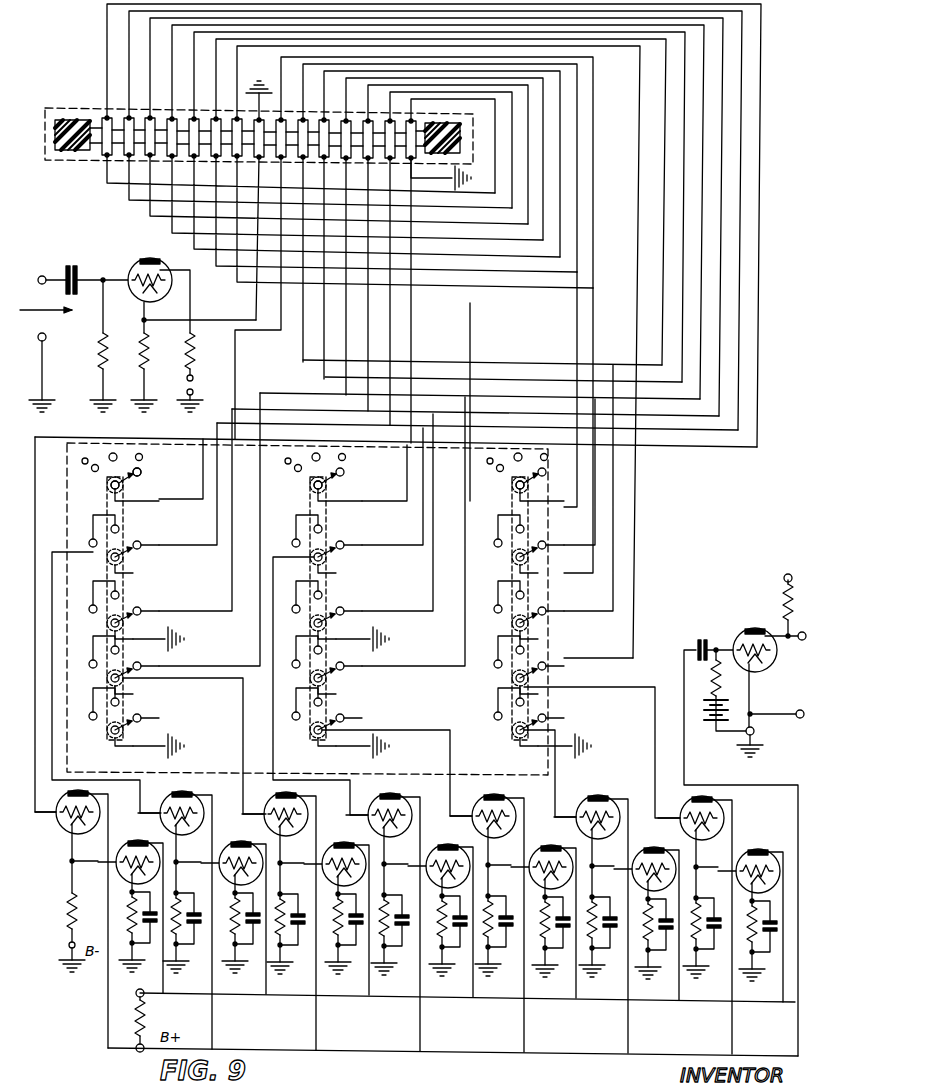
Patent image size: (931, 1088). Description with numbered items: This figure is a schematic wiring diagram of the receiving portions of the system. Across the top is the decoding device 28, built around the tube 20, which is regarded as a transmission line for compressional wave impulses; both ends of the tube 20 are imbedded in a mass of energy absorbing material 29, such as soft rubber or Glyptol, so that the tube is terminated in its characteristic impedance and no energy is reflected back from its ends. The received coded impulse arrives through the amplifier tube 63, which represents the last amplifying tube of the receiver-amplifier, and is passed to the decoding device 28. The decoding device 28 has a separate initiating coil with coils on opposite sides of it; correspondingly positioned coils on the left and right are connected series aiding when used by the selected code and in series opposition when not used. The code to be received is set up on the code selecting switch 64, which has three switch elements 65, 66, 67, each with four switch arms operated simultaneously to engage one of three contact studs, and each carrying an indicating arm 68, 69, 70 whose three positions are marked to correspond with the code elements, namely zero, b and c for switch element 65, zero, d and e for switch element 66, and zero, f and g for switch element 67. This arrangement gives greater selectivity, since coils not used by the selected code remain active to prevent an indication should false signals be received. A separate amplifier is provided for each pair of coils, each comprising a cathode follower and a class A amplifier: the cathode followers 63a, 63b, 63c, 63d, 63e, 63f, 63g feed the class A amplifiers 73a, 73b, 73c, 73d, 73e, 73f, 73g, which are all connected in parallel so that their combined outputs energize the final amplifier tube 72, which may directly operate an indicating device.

The tube 20 is at (98, 157).
The decoding device 28 is at (52, 108).
The energy absorbing material 29 is at (62, 150).
The amplifier tube 63 is at (137, 268).
The cathode follower tube 63a is at (62, 805).
The cathode follower tube 63b is at (166, 806).
The cathode follower tube 63c is at (270, 807).
The cathode follower tube 63d is at (374, 808).
The cathode follower tube 63e is at (478, 809).
The cathode follower tube 63f is at (582, 810).
The cathode follower tube 63g is at (686, 811).
The code selecting switch 64 is at (67, 500).
The switch element 65 is at (125, 483).
The switch element 66 is at (310, 487).
The switch element 67 is at (512, 491).
The indicating arm 68 is at (140, 480).
The indicating arm 69 is at (332, 481).
The indicating arm 70 is at (530, 484).
The final amplifier tube 72 is at (753, 628).
The class A amplifier 73a is at (132, 840).
The class A amplifier 73b is at (235, 841).
The class A amplifier 73c is at (338, 842).
The class A amplifier 73d is at (442, 844).
The class A amplifier 73e is at (545, 845).
The class A amplifier 73f is at (648, 847).
The class A amplifier 73g is at (752, 849).